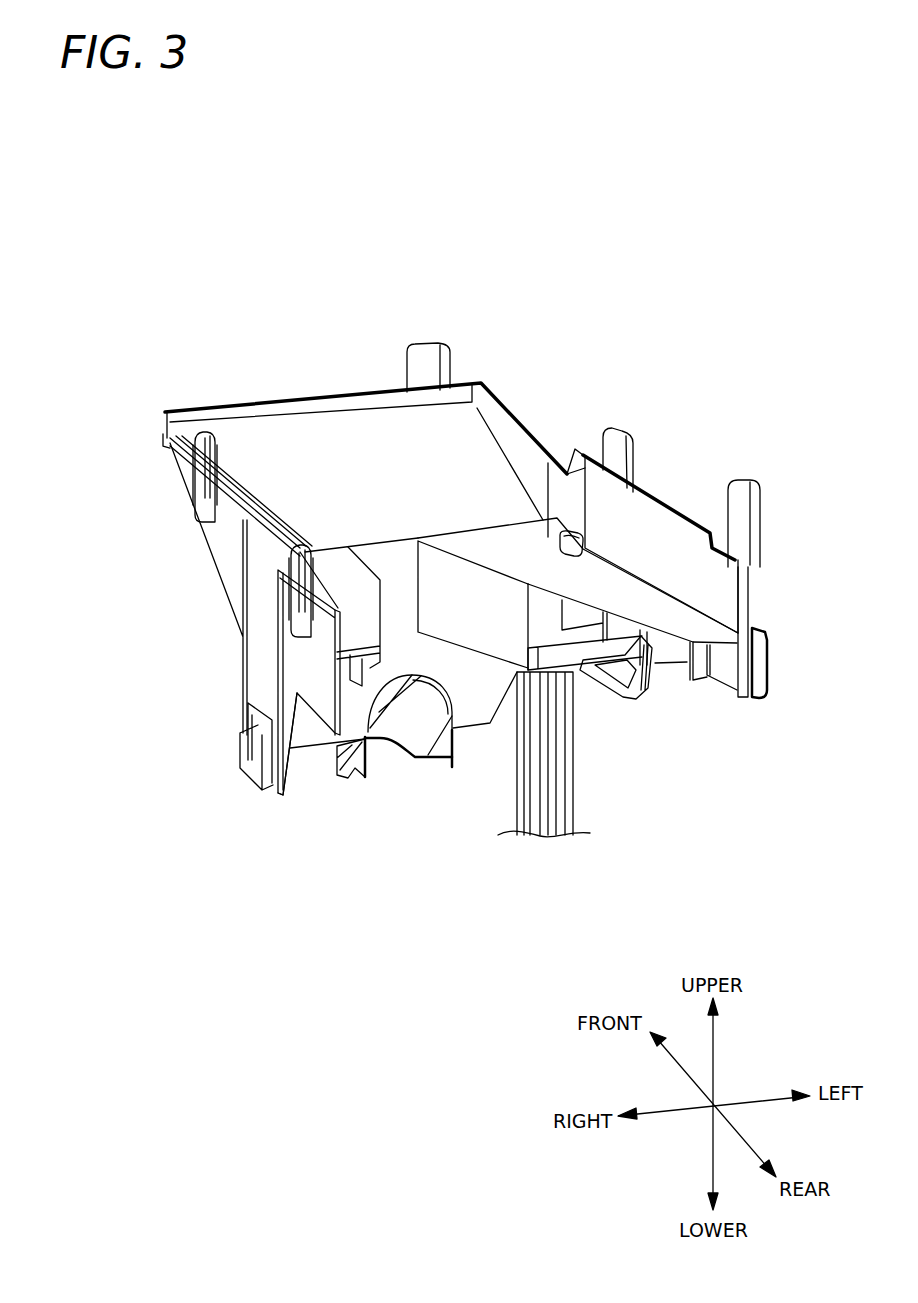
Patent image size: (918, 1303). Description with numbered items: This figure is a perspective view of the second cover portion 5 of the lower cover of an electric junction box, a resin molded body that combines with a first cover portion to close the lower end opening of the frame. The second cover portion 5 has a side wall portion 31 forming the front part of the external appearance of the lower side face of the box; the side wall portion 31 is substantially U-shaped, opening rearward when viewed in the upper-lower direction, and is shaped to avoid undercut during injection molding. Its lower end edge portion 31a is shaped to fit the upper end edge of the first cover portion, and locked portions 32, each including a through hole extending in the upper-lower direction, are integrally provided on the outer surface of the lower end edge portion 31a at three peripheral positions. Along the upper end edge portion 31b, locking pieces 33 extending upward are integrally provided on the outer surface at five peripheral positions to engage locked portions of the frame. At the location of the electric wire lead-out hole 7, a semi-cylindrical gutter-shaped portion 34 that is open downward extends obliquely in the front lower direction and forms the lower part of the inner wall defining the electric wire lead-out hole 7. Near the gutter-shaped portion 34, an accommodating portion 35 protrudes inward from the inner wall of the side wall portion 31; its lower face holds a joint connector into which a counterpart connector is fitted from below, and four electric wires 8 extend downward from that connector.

The second cover portion 5 is at (651, 298).
The electric wire lead-out hole 7 is at (350, 774).
The electric wires 8 is at (575, 800).
The side wall portion 31 is at (258, 668).
The lower end edge portion 31a is at (276, 792).
The upper end edge portion 31b is at (289, 400).
The locked portion 32 is at (240, 765).
The locking piece 33 is at (427, 347).
The gutter-shaped portion 34 is at (410, 738).
The accommodating portion 35 is at (500, 545).